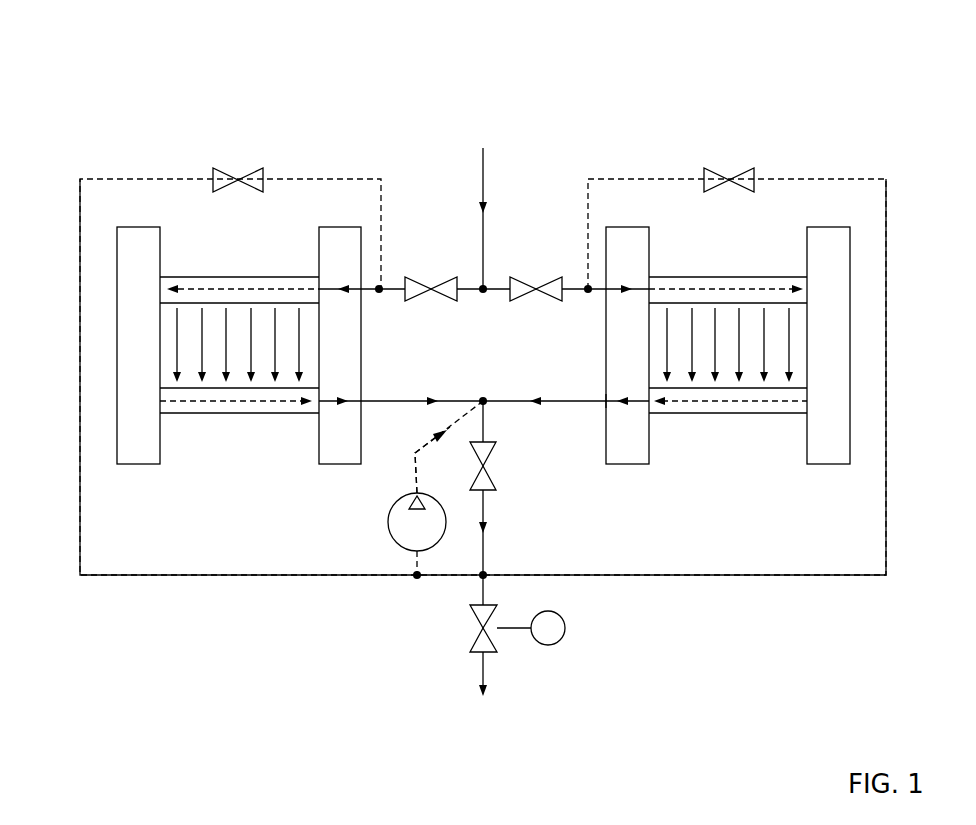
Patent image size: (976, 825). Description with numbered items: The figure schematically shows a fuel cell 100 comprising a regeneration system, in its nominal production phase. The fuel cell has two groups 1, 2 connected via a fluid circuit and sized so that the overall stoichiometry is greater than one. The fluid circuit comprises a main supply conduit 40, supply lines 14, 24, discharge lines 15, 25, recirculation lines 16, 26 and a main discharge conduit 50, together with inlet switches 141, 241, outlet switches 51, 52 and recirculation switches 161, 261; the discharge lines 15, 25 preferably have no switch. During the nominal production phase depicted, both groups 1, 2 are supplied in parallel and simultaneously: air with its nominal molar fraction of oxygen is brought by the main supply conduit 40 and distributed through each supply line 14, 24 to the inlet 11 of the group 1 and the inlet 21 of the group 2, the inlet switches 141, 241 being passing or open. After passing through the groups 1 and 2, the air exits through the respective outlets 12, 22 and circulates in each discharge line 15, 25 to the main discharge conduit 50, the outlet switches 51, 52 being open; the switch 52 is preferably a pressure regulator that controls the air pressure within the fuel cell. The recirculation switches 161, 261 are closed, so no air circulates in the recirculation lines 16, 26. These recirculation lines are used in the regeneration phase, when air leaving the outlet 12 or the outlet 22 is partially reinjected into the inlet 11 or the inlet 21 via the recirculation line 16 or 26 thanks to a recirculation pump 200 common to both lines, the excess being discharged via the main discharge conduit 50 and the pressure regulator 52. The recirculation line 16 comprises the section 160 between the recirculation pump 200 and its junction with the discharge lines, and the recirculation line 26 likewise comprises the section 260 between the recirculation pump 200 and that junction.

The fuel cell 100 is at (116, 42).
The group 1 is at (117, 250).
The group 2 is at (850, 250).
The inlet 11 is at (366, 288).
The outlet 12 is at (362, 403).
The supply line 14 is at (392, 287).
The discharge line 15 is at (412, 403).
The recirculation line 16 is at (80, 238).
The recirculation switch 161 is at (214, 173).
The inlet 21 is at (603, 288).
The outlet 22 is at (557, 403).
The supply line 24 is at (573, 287).
The discharge line 25 is at (603, 403).
The recirculation line 26 is at (886, 238).
The recirculation switch 261 is at (754, 173).
The main supply conduit 40 is at (485, 188).
The main discharge conduit 50 is at (485, 666).
The outlet switch 51 is at (473, 493).
The outlet switch 52 is at (497, 644).
The inlet switch 141 is at (447, 287).
The inlet switch 241 is at (525, 287).
The section 160 is at (460, 418).
The section 260 is at (461, 410).
The recirculation pump 200 is at (446, 518).